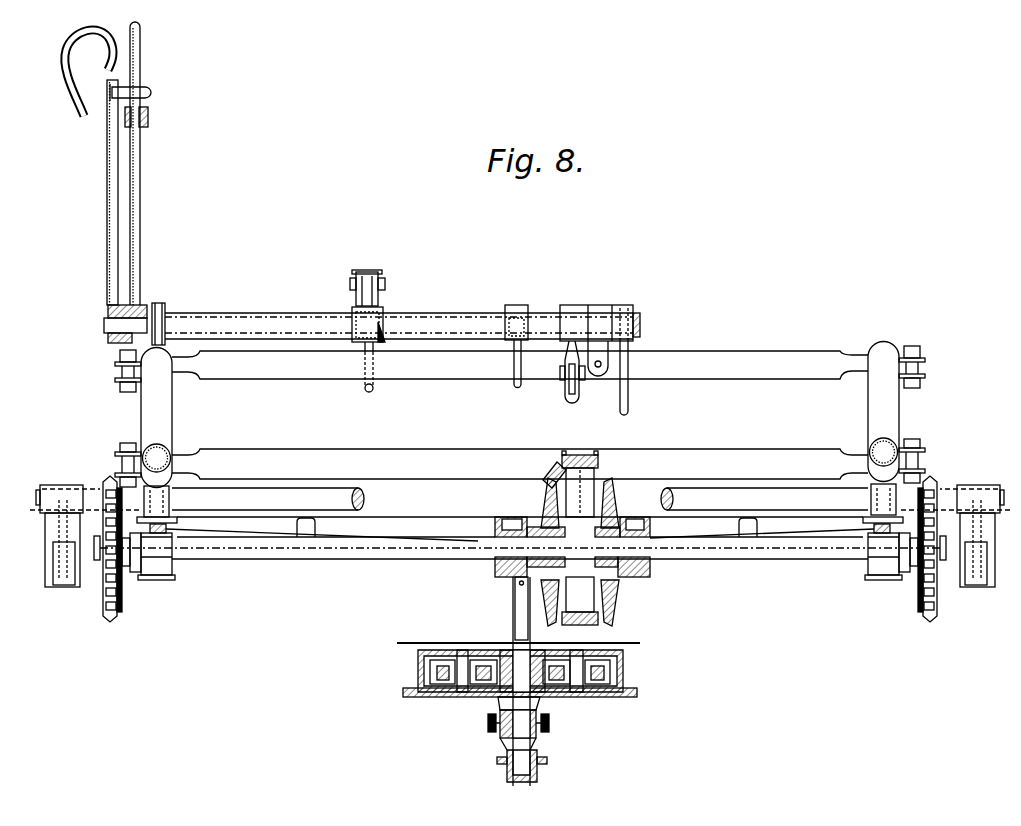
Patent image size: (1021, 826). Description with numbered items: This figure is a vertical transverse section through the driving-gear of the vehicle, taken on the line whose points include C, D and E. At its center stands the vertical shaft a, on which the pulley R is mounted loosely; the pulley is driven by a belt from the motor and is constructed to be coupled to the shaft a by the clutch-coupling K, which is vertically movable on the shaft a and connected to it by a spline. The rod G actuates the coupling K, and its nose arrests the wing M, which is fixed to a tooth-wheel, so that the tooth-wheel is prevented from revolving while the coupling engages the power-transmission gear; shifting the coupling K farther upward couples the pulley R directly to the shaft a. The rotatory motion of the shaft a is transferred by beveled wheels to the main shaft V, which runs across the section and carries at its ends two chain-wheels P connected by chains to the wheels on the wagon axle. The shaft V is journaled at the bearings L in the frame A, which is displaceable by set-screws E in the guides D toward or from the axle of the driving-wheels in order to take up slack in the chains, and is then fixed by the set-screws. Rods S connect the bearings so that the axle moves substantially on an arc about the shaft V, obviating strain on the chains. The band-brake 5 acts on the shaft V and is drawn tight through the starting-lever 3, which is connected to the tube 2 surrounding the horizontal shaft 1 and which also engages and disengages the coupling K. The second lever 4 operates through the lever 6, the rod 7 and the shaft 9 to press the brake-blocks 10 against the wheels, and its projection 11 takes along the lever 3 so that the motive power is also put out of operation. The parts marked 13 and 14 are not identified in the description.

The horizontal shaft 1 is at (104, 326).
The tube 2 is at (273, 313).
The starting-lever 3 is at (140, 172).
The lever 4 is at (106, 195).
The band-brake 5 is at (578, 455).
The lever 6 is at (634, 341).
The rod 7 is at (629, 393).
The shaft 9 is at (365, 500).
The brake-blocks 10 is at (520, 549).
The projection 11 is at (149, 92).
The clamp 13 is at (366, 272).
The pin 14 is at (365, 390).
The frame A is at (520, 522).
The section line point C is at (548, 473).
The guides D is at (176, 518).
The set-screws E is at (167, 529).
The rod G is at (513, 386).
The clutch-coupling K is at (545, 704).
The bearings L is at (166, 566).
The wing M is at (446, 643).
The chain-wheels P is at (520, 549).
The pulley R is at (418, 668).
The rods S is at (149, 113).
The main shaft V is at (520, 548).
The shaft a is at (515, 598).